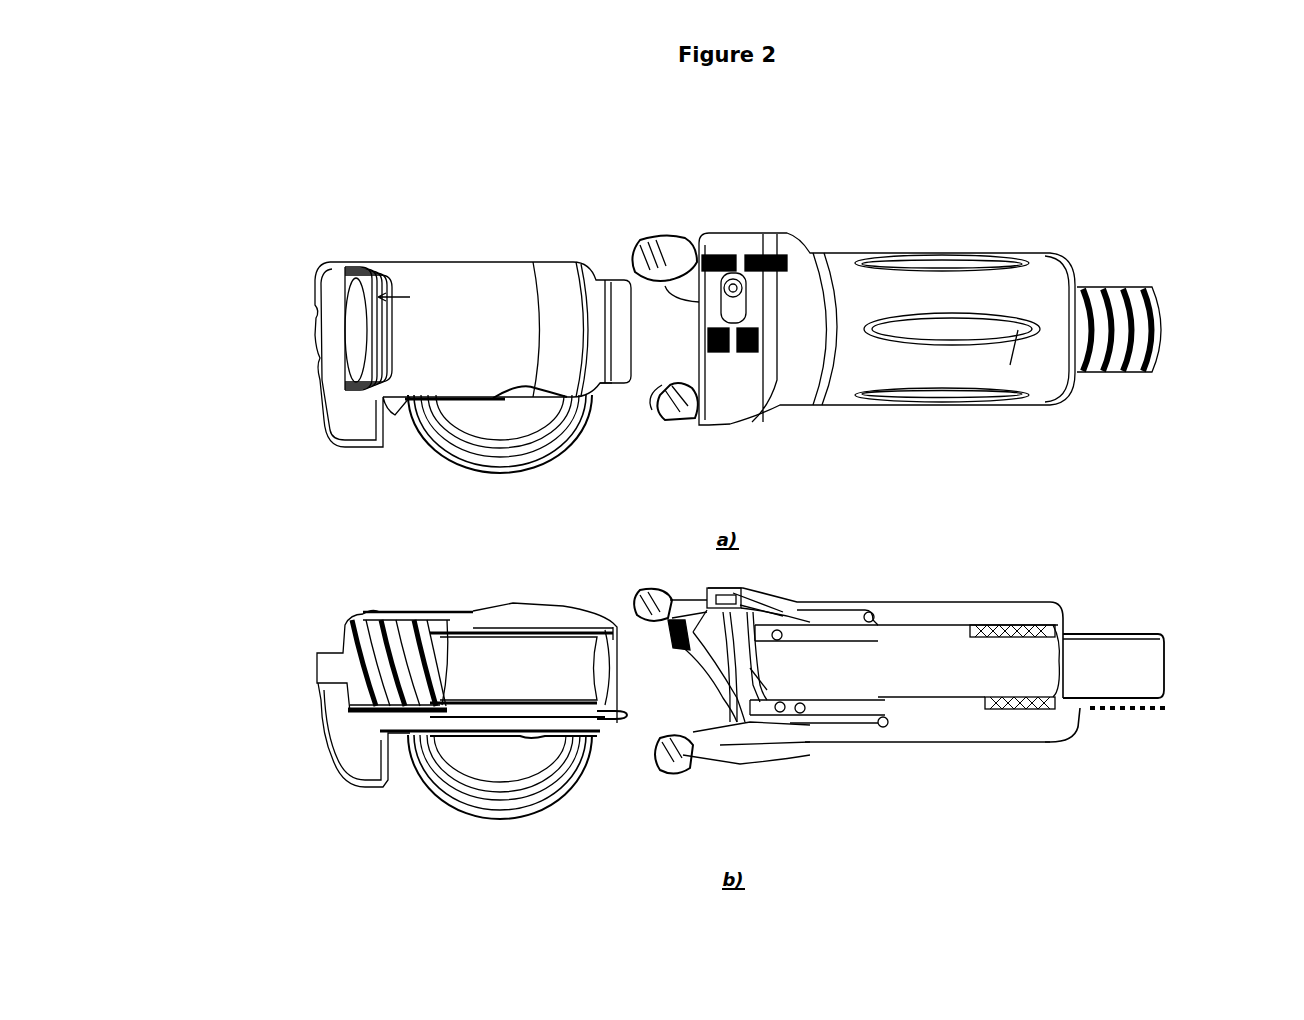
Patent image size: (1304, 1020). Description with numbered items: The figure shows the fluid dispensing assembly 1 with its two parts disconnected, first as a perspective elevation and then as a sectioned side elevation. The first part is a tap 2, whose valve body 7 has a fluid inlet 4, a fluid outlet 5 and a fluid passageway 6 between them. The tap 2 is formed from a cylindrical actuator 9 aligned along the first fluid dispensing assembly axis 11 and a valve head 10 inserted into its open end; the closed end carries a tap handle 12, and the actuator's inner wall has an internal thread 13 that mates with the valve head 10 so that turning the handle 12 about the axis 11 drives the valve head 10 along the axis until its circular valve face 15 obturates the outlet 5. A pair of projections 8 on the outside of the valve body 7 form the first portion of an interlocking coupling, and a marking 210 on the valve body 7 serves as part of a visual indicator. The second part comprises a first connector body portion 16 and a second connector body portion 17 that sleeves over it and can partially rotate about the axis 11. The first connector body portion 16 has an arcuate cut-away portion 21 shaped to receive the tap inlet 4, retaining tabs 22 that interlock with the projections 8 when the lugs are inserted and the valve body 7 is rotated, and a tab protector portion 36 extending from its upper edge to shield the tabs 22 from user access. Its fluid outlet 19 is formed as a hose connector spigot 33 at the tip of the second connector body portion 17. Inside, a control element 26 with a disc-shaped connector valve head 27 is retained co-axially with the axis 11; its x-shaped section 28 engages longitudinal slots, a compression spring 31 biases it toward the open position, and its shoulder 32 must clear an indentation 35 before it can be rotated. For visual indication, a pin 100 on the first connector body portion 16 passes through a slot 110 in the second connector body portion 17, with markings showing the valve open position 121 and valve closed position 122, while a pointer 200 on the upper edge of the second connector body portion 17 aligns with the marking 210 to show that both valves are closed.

The fluid dispensing assembly 1 is at (1012, 180).
The tap 2 is at (432, 470).
The fluid inlet 4 is at (518, 826).
The fluid outlet 5 is at (645, 362).
The fluid passageway 6 is at (395, 650).
The valve body 7 is at (278, 250).
The projections 8 is at (532, 400).
The cylindrical actuator 9 is at (500, 618).
The valve head 10 is at (548, 665).
The first fluid dispensing assembly axis 11 is at (310, 360).
The tap handle 12 is at (333, 280).
The internal thread 13 is at (371, 612).
The circular valve face 15 is at (605, 722).
The first connector body portion 16 is at (740, 600).
The second connector body portion 17 is at (950, 400).
The fluid outlet 19 is at (1174, 331).
The arcuate cut-away portion 21 is at (723, 685).
The retaining tabs 22 is at (648, 245).
The control element 26 is at (927, 650).
The connector valve head 27 is at (800, 728).
The x-shaped section 28 is at (932, 700).
The compression spring 31 is at (1040, 712).
The shoulder 32 is at (897, 625).
The hose connector spigot 33 is at (1112, 287).
The indentation 35 is at (868, 612).
The tab protector portion 36 is at (725, 762).
The pin 100 is at (735, 295).
The slot 110 is at (780, 257).
The valve open position 121 is at (760, 350).
The valve closed position 122 is at (805, 257).
The pointer 200 is at (712, 255).
The marking 210 is at (484, 285).